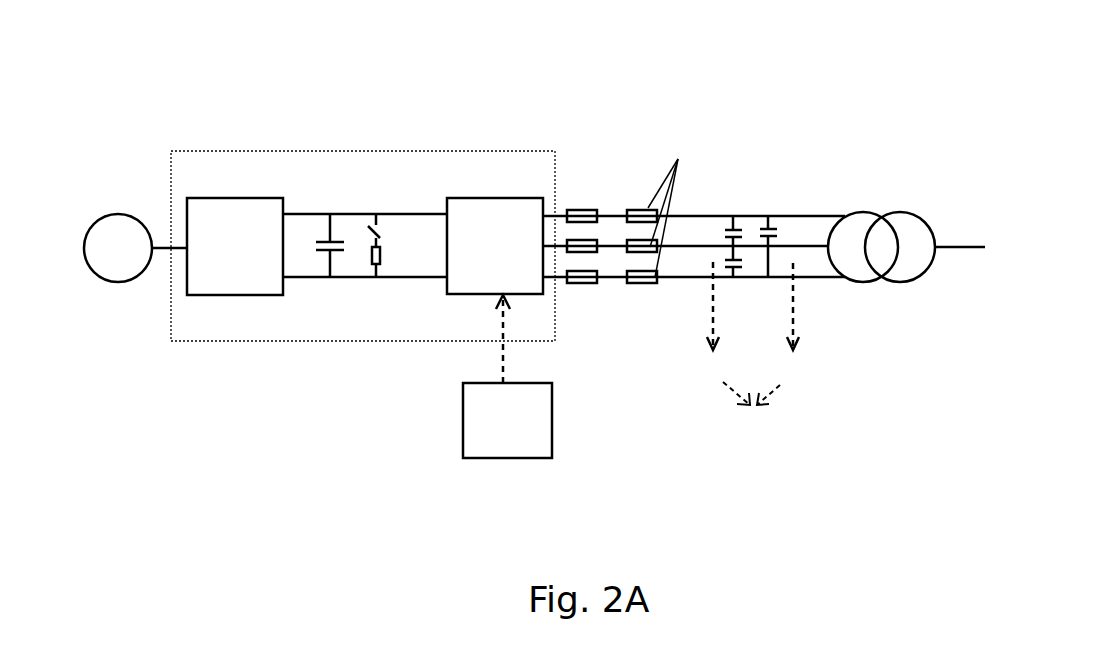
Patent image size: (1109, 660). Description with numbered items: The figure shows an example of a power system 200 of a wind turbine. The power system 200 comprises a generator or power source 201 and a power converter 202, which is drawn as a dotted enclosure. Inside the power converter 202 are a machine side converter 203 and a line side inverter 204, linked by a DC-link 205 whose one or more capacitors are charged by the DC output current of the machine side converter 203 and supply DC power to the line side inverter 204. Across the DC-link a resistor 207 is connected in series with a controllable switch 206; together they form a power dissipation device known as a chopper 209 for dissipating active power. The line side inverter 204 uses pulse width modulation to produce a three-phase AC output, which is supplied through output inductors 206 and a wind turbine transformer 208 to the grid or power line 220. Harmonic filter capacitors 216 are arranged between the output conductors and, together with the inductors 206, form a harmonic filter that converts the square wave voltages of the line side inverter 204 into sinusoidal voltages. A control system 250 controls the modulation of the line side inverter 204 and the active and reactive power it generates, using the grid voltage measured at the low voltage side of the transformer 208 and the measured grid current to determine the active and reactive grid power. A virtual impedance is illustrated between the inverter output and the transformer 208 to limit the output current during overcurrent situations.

The power system 200 is at (377, 48).
The generator 201 is at (107, 212).
The power converter 202 is at (367, 134).
The machine side converter 203 is at (230, 187).
The line side inverter 204 is at (490, 190).
The DC-link 205 is at (323, 223).
The controllable switch / output inductors 206 is at (379, 227).
The resistor 207 is at (382, 253).
The wind turbine transformer 208 is at (875, 212).
The chopper 209 is at (363, 262).
The harmonic filter capacitors 216 is at (745, 220).
The power line 220 is at (963, 255).
The control system 250 is at (461, 421).